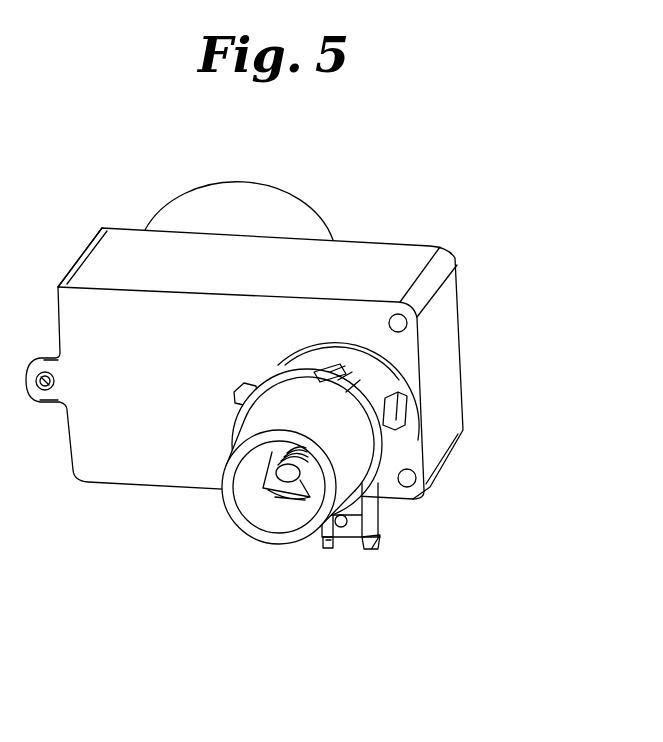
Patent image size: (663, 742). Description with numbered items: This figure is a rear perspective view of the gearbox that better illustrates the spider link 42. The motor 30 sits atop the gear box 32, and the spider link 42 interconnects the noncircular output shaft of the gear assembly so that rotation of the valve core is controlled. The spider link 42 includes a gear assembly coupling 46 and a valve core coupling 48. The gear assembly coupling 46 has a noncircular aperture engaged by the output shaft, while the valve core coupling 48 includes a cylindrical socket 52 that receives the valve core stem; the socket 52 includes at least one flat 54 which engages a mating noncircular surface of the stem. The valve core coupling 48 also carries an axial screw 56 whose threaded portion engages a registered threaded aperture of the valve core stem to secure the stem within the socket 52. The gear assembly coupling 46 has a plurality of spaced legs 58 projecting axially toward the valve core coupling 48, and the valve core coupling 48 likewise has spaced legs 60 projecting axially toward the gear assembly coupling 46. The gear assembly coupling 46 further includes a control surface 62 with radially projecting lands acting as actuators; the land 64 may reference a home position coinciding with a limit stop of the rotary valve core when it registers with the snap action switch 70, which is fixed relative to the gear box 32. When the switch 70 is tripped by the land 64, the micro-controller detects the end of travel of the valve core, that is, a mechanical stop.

The motor 30 is at (282, 192).
The gear box 32 is at (367, 260).
The spider link 42 is at (195, 407).
The gear assembly coupling 46 is at (375, 365).
The valve core coupling 48 is at (392, 483).
The cylindrical socket 52 is at (224, 503).
The flat 54 is at (286, 497).
The axial screw 56 is at (278, 473).
The spaced legs 58 is at (345, 377).
The spaced legs 60 is at (303, 340).
The control surface 62 is at (372, 385).
The land 64 is at (405, 425).
The snap action switch 70 is at (378, 517).